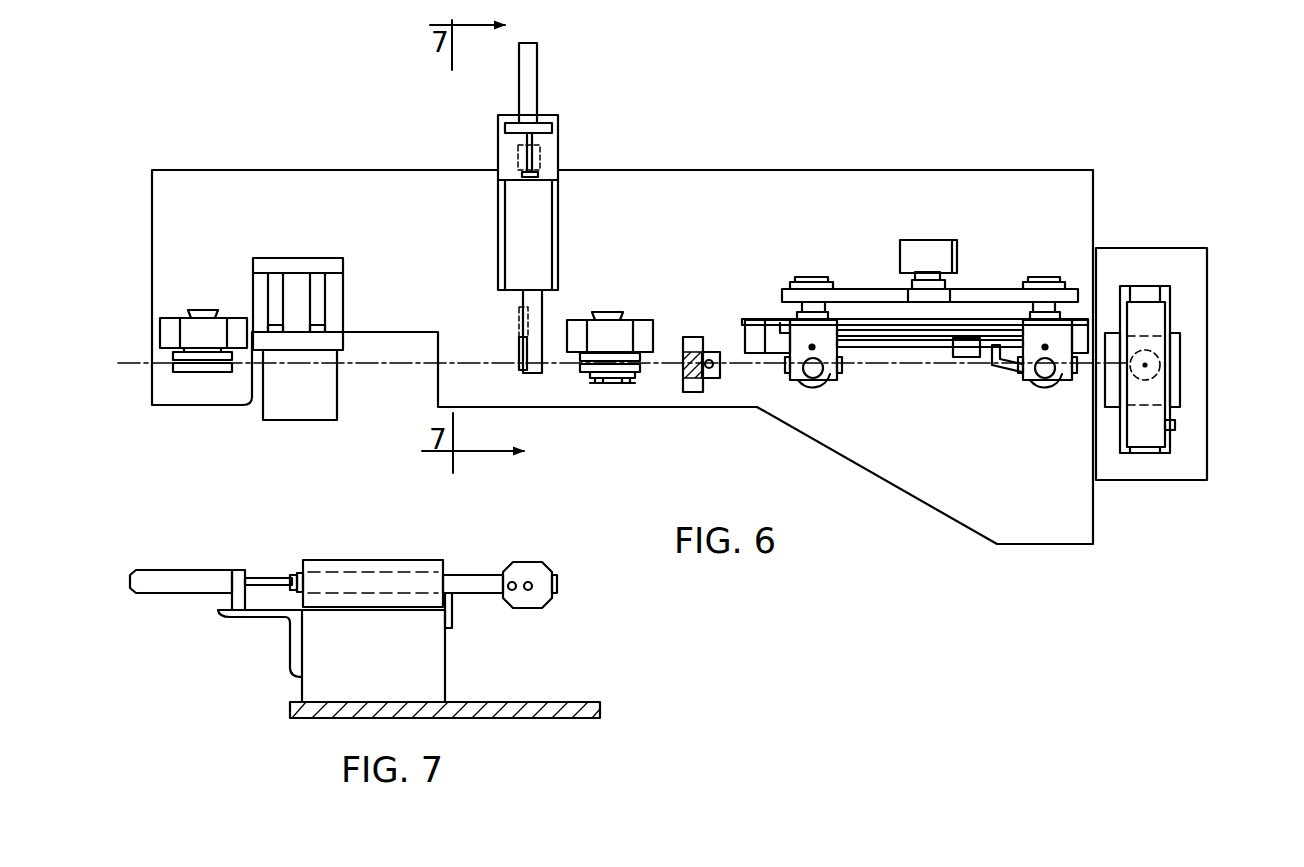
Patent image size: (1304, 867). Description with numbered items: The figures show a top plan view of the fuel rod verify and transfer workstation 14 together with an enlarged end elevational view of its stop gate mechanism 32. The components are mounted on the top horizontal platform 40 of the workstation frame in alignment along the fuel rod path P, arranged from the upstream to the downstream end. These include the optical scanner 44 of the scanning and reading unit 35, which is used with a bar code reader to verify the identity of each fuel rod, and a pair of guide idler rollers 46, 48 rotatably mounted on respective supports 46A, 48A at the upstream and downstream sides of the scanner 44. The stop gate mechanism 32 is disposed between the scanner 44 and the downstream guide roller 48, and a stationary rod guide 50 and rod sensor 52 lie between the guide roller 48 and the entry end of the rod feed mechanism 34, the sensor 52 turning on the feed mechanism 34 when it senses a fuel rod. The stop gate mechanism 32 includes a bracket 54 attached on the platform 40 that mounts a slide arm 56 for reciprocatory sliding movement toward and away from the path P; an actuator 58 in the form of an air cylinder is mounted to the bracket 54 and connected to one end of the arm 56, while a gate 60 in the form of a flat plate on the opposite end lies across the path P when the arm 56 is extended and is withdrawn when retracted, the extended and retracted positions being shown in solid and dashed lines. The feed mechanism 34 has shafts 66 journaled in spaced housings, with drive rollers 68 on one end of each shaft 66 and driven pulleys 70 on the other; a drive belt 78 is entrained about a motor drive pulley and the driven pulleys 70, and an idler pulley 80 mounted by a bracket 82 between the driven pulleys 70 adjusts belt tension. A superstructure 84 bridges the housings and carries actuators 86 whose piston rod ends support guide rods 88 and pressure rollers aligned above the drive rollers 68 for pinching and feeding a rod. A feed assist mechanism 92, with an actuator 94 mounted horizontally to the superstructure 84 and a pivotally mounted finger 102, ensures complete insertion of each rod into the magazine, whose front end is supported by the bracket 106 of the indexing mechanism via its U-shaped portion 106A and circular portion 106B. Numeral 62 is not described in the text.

In FIG. 6, the fuel rod verify and transfer workstation 14 is at (743, 135).
In FIG. 6, the stop gate mechanism 32 is at (588, 118).
In FIG. 6, the rod feed mechanism 34 is at (946, 222).
In FIG. 6, the scanning and reading unit 35 is at (322, 244).
In FIG. 6, the top horizontal platform 40 is at (767, 170).
In FIG. 7, the top horizontal platform 40 is at (550, 702).
In FIG. 6, the optical scanner 44 is at (343, 292).
In FIG. 6, the guide idler roller 46 is at (190, 372).
In FIG. 6, the support 46A is at (190, 328).
In FIG. 6, the guide idler roller 48 is at (608, 385).
In FIG. 6, the support 48A is at (627, 315).
In FIG. 6, the stationary rod guide 50 is at (698, 393).
In FIG. 6, the rod sensor 52 is at (710, 376).
In FIG. 6, the bracket 54 is at (558, 228).
In FIG. 7, the bracket 54 is at (445, 665).
In FIG. 6, the slide arm 56 is at (542, 158).
In FIG. 7, the slide arm 56 is at (478, 573).
In FIG. 6, the actuator 58 is at (538, 73).
In FIG. 7, the actuator 58 is at (207, 570).
In FIG. 6, the gate 60 is at (518, 345).
In FIG. 7, the gate 60 is at (527, 562).
In FIG. 6, the bearing 62 is at (682, 360).
In FIG. 6, the shaft 66 is at (797, 312).
In FIG. 6, the drive roller 68 is at (846, 374).
In FIG. 6, the driven pulley 70 is at (847, 283).
In FIG. 6, the drive belt 78 is at (988, 289).
In FIG. 6, the idler pulley 80 is at (933, 288).
In FIG. 6, the bracket 82 is at (910, 289).
In FIG. 6, the superstructure 84 is at (873, 312).
In FIG. 6, the actuator 86 is at (805, 380).
In FIG. 6, the guide rod 88 is at (809, 346).
In FIG. 6, the fuel rod feed assist mechanism 92 is at (977, 376).
In FIG. 6, the actuator 94 is at (900, 356).
In FIG. 6, the finger 102 is at (1000, 370).
In FIG. 6, the bracket 106 is at (1188, 316).
In FIG. 6, the U-shaped portion 106A is at (1165, 453).
In FIG. 6, the circular portion 106B is at (1120, 318).
In FIG. 6, the fuel rod path P is at (365, 363).